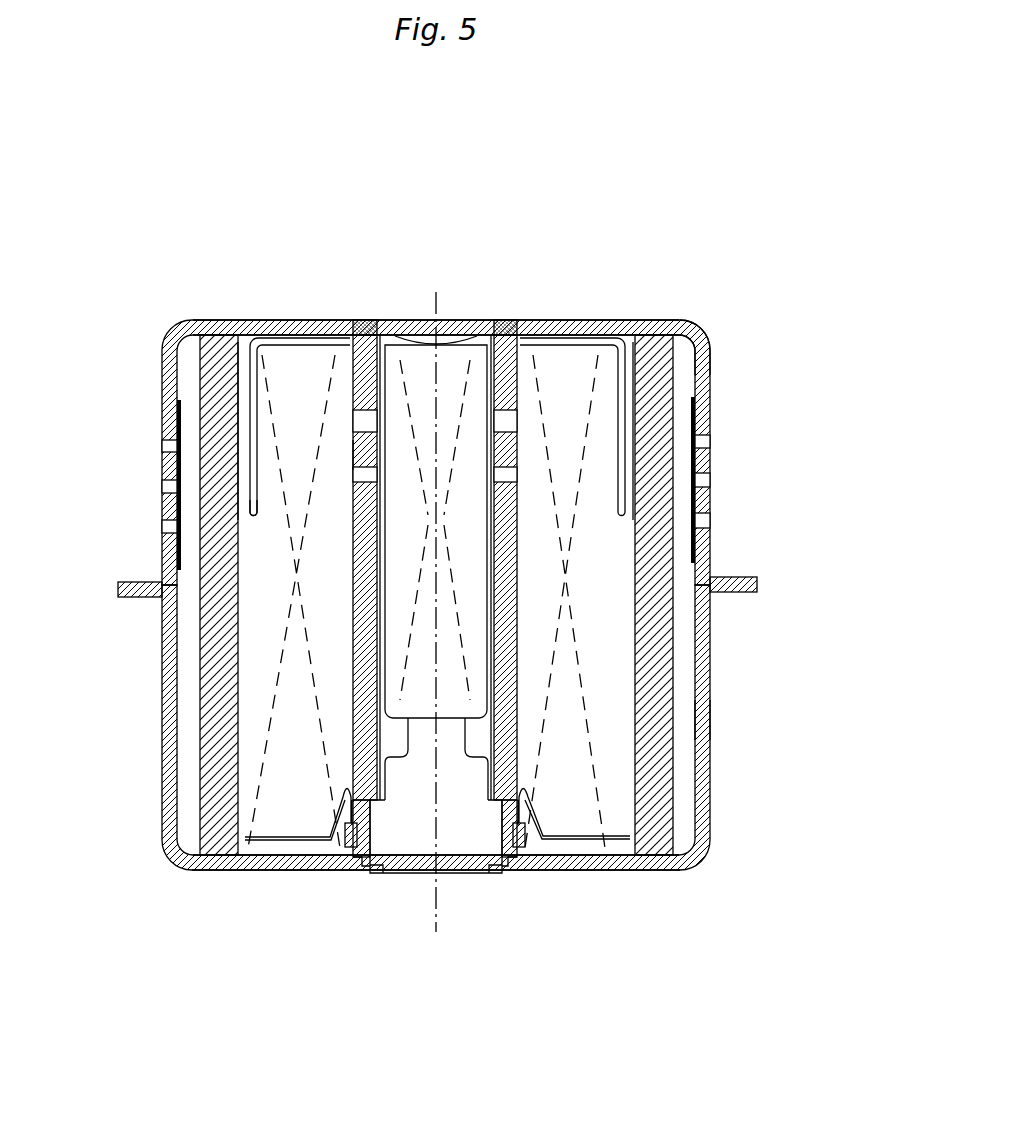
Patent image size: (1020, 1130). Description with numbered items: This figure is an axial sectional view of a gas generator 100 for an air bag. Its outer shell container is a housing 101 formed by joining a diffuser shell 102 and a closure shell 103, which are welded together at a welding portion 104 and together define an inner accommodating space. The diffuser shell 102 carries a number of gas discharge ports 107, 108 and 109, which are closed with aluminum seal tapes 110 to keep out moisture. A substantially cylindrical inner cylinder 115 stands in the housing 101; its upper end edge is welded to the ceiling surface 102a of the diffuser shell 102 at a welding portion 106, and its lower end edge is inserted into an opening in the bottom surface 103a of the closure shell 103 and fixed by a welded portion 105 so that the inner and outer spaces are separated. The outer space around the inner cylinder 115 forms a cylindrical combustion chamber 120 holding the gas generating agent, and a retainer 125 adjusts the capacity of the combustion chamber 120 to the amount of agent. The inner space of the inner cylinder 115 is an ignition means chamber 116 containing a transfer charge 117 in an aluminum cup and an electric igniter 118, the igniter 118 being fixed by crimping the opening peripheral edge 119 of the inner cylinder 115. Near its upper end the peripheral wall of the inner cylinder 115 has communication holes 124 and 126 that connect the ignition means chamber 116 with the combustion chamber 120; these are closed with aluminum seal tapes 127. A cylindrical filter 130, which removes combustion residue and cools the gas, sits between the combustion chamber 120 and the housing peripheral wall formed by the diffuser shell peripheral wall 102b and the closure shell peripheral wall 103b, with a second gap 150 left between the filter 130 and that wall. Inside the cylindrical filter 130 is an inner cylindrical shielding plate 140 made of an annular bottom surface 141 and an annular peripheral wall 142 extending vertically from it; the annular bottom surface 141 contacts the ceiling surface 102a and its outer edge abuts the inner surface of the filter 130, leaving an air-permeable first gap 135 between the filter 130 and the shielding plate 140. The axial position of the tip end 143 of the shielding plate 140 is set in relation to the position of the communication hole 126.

The gas generator 100 is at (560, 248).
The housing 101 is at (486, 583).
The diffuser shell 102 is at (447, 404).
The ceiling surface 102a is at (456, 320).
The diffuser shell peripheral wall 102b is at (712, 375).
The closure shell 103 is at (504, 764).
The bottom surface 103a is at (628, 870).
The closure shell peripheral wall 103b is at (690, 722).
The welding portion 104 is at (162, 580).
The welded portion 105 is at (513, 866).
The welding portion 106 is at (505, 336).
The gas discharge port 107 is at (712, 440).
The gas discharge port 108 is at (712, 480).
The gas discharge port 109 is at (712, 520).
The aluminum seal tape 110 is at (183, 428).
The inner cylinder 115 is at (388, 336).
The ignition means chamber 116 is at (390, 740).
The transfer charge 117 is at (472, 596).
The electric igniter 118 is at (410, 875).
The opening peripheral edge 119 is at (496, 876).
The combustion chamber 120 is at (398, 511).
The communication hole 124 is at (497, 418).
The retainer 125 is at (280, 838).
The communication hole 126 is at (497, 471).
The aluminum seal tape 127 is at (352, 455).
The cylindrical filter 130 is at (212, 678).
The first gap 135 is at (640, 360).
The inner cylindrical shielding plate 140 is at (278, 380).
The annular bottom surface 141 is at (297, 336).
The annular peripheral wall 142 is at (262, 395).
The tip end 143 is at (255, 518).
The second gap 150 is at (676, 822).